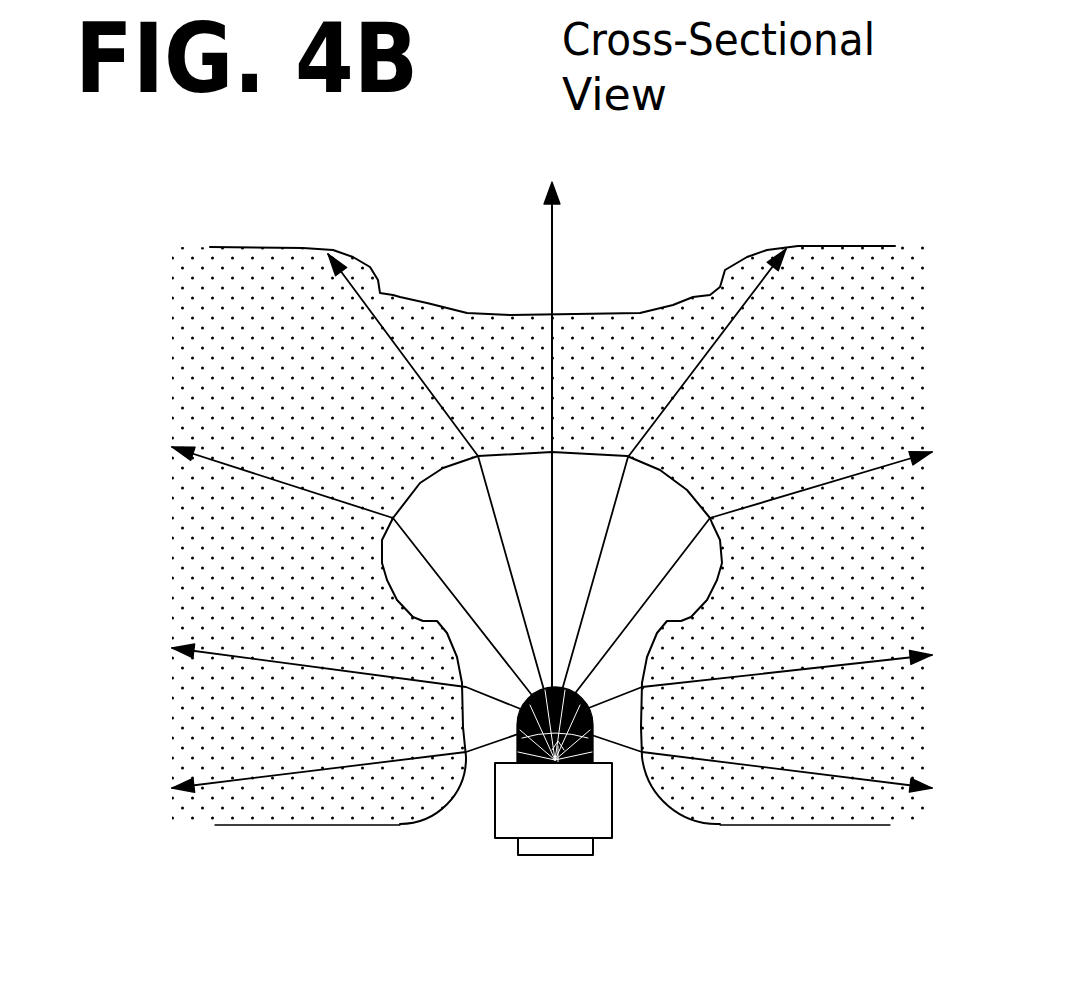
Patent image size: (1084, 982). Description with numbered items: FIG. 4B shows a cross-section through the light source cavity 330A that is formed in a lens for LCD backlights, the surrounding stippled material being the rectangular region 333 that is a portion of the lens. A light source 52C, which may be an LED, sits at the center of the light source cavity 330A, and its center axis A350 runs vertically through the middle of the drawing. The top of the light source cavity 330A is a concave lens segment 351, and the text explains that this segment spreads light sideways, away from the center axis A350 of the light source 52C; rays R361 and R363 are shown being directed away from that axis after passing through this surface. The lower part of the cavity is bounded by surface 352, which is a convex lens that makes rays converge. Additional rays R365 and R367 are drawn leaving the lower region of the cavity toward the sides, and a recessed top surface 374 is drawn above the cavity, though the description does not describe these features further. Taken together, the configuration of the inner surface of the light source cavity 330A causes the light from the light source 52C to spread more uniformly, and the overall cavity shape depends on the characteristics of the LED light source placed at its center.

The recessed top surface of lens 374 is at (437, 307).
The center axis A350 is at (563, 238).
The light source cavity 330A is at (462, 537).
The ray R361 is at (733, 335).
The concave lens segment 351 is at (593, 452).
The ray R363 is at (859, 488).
The light ray R365 is at (835, 649).
The light ray R367 is at (847, 762).
The rectangular region 333 is at (178, 741).
The surface 352 is at (466, 721).
The light source 52C is at (558, 763).